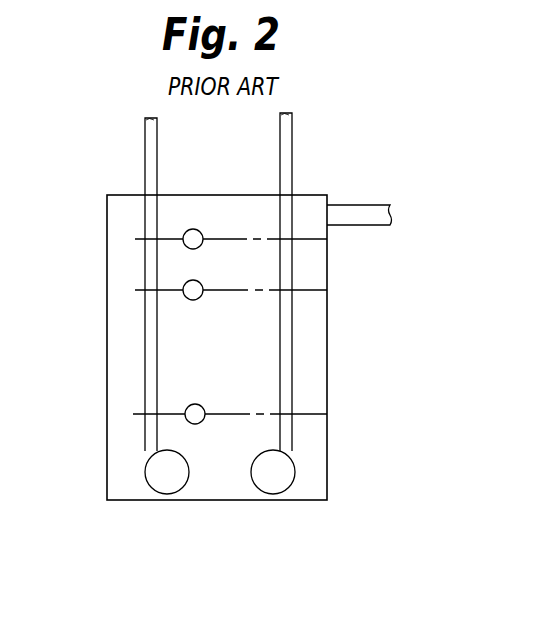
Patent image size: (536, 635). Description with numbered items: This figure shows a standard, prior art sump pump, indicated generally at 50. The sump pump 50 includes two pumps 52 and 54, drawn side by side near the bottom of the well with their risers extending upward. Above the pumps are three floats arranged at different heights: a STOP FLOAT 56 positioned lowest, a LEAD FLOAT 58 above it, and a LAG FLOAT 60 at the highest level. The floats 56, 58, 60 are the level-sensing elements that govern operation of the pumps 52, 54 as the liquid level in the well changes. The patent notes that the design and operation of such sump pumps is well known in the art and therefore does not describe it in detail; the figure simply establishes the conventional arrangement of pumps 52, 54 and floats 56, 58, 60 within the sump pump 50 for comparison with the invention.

The sump pump 50 is at (346, 382).
The pump 52 is at (168, 494).
The pump 54 is at (281, 493).
The STOP FLOAT 56 is at (203, 420).
The LEAD FLOAT 58 is at (192, 300).
The LAG FLOAT 60 is at (185, 246).